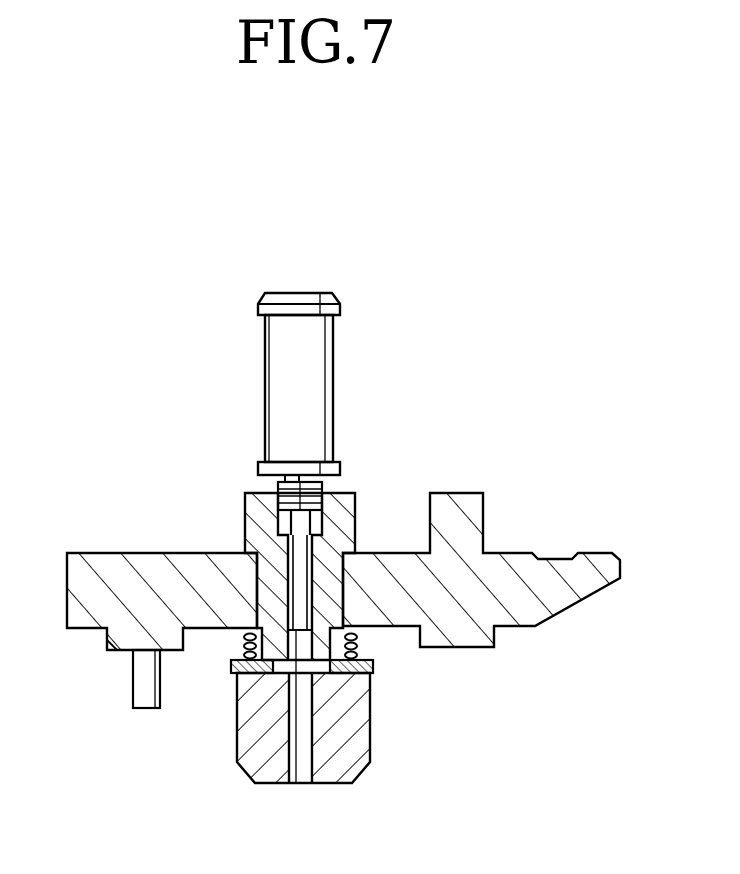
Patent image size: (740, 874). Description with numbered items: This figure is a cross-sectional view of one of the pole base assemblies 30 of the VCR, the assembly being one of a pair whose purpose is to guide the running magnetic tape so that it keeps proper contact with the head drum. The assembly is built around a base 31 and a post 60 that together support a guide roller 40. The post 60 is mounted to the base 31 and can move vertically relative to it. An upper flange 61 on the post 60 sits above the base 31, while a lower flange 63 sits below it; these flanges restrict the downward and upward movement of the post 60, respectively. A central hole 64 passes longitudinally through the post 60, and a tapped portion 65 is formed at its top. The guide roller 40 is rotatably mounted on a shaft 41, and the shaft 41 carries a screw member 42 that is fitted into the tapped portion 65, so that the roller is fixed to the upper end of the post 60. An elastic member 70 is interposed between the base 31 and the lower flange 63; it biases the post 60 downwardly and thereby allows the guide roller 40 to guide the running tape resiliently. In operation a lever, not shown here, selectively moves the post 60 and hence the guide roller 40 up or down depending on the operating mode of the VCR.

The pole base assembly 30 is at (453, 180).
The base 31 is at (377, 553).
The guide roller 40 is at (252, 388).
The shaft 41 is at (300, 608).
The screw member 42 is at (275, 482).
The post 60 is at (265, 583).
The upper flange 61 is at (247, 528).
The lower flange 63 is at (358, 673).
The central hole 64 is at (290, 718).
The tapped portion 65 is at (320, 525).
The elastic member 70 is at (363, 640).